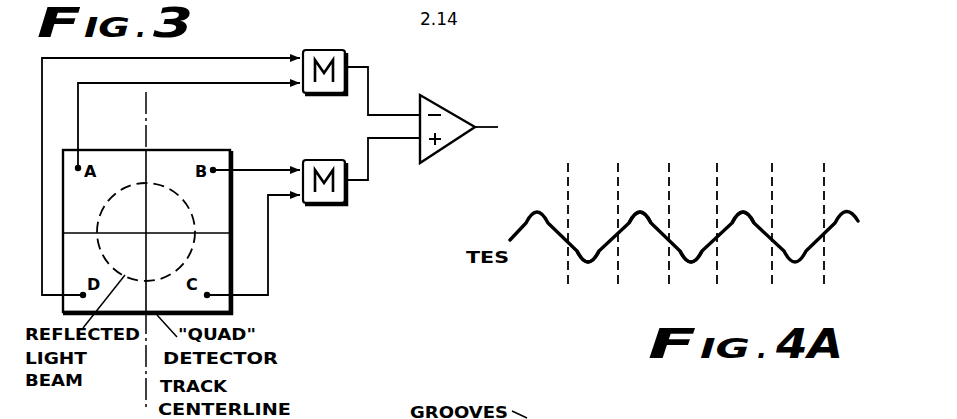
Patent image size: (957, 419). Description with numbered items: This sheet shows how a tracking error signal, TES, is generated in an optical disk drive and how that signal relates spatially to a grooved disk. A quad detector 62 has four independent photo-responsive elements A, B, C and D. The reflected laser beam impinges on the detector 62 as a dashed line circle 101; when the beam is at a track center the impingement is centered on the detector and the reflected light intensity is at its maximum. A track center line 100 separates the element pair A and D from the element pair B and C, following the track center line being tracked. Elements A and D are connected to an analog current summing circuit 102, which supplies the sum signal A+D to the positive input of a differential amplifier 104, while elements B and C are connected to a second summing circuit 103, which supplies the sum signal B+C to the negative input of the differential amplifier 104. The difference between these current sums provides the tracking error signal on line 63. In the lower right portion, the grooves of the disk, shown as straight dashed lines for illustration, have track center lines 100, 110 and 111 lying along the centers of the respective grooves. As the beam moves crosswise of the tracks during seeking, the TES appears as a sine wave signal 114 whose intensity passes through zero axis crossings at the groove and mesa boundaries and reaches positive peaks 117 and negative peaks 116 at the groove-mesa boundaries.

In FIG. 3, the detector 62 is at (204, 151).
In FIG. 3, the dashed line circle 101 is at (119, 192).
In FIG. 3, the track center line 100 is at (146, 368).
In FIG. 4A, the track center line 100 is at (568, 170).
In FIG. 3, the analog current summing circuit 102 is at (360, 38).
In FIG. 3, the second summing circuit 103 is at (339, 132).
In FIG. 3, the differential amplifier 104 is at (452, 100).
In FIG. 3, the line 63 is at (487, 124).
In FIG. 4A, the track center line 110 is at (668, 170).
In FIG. 4A, the track center line 111 is at (771, 170).
In FIG. 4A, the sine wave signal 114 is at (517, 225).
In FIG. 4A, the negative peaks 116 is at (595, 266).
In FIG. 4A, the positive peaks 117 is at (653, 183).